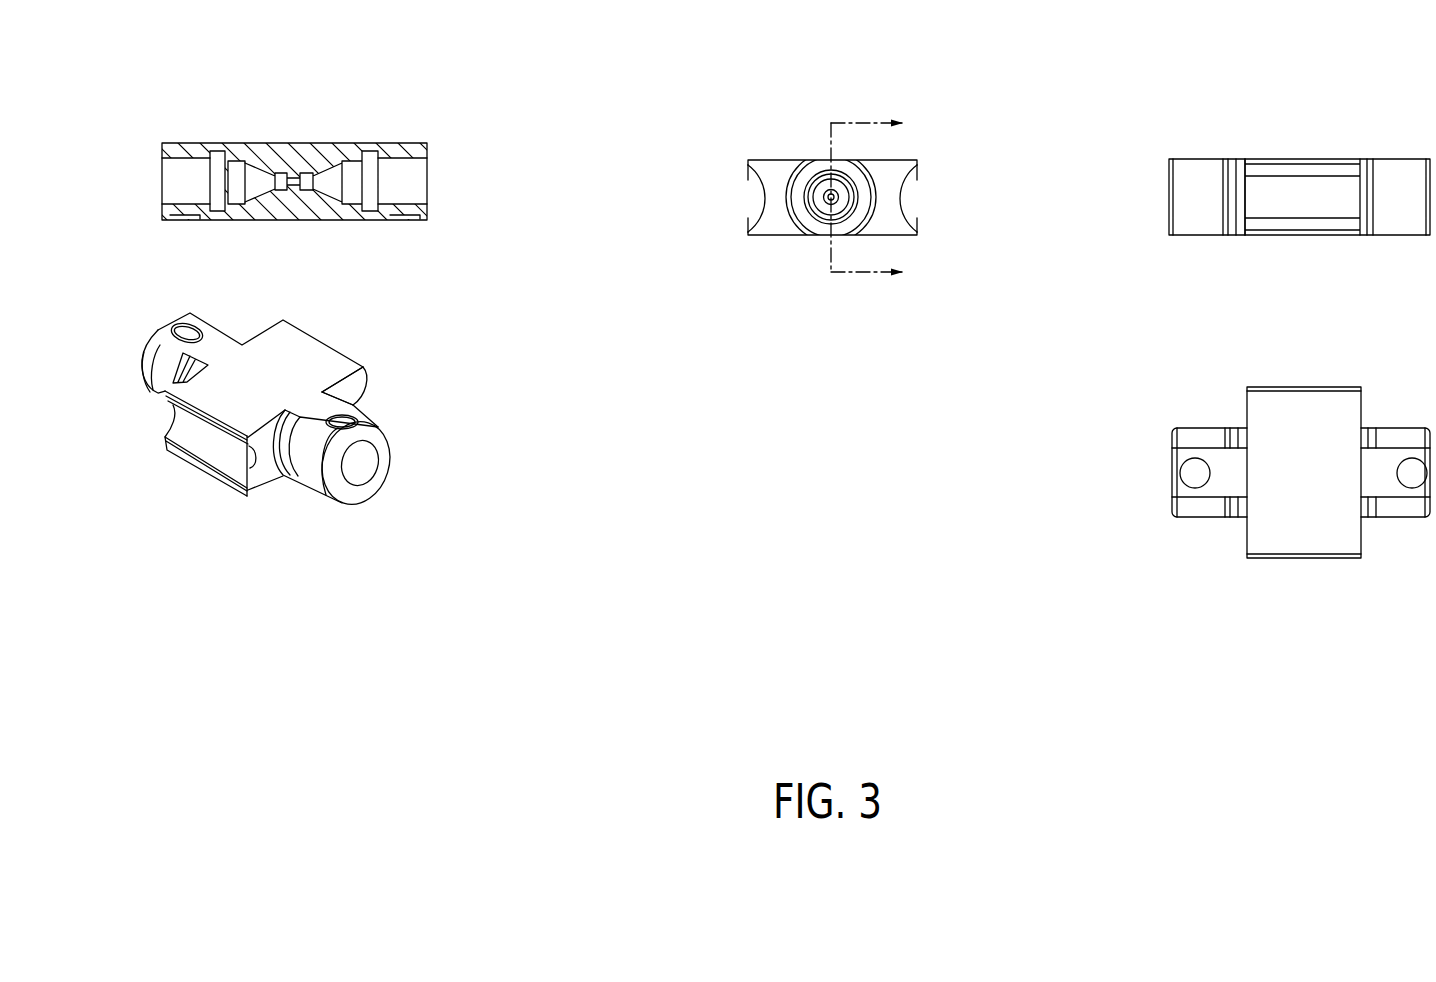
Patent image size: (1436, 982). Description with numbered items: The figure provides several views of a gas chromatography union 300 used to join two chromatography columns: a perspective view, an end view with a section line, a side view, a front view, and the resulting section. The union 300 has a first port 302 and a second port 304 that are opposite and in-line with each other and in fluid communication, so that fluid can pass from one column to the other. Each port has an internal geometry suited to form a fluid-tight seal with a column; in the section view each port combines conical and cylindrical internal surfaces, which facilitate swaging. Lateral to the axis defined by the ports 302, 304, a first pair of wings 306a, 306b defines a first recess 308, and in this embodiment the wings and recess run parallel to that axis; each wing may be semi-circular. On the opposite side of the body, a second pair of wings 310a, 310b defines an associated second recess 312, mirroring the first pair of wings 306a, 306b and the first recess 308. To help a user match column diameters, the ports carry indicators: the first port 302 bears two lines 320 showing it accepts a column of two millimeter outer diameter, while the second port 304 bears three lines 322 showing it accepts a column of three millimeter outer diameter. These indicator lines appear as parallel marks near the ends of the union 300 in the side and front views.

The gas chromatography union 300 is at (1337, 618).
The first port 302 is at (355, 482).
The second port 304 is at (152, 400).
The first wing 306a is at (255, 470).
The first wing 306b is at (247, 473).
The first recess 308 is at (219, 455).
The second wing 310a is at (367, 370).
The second wing 310b is at (917, 232).
The second recess 312 is at (360, 395).
The two lines 320 is at (292, 447).
The three lines 322 is at (162, 367).